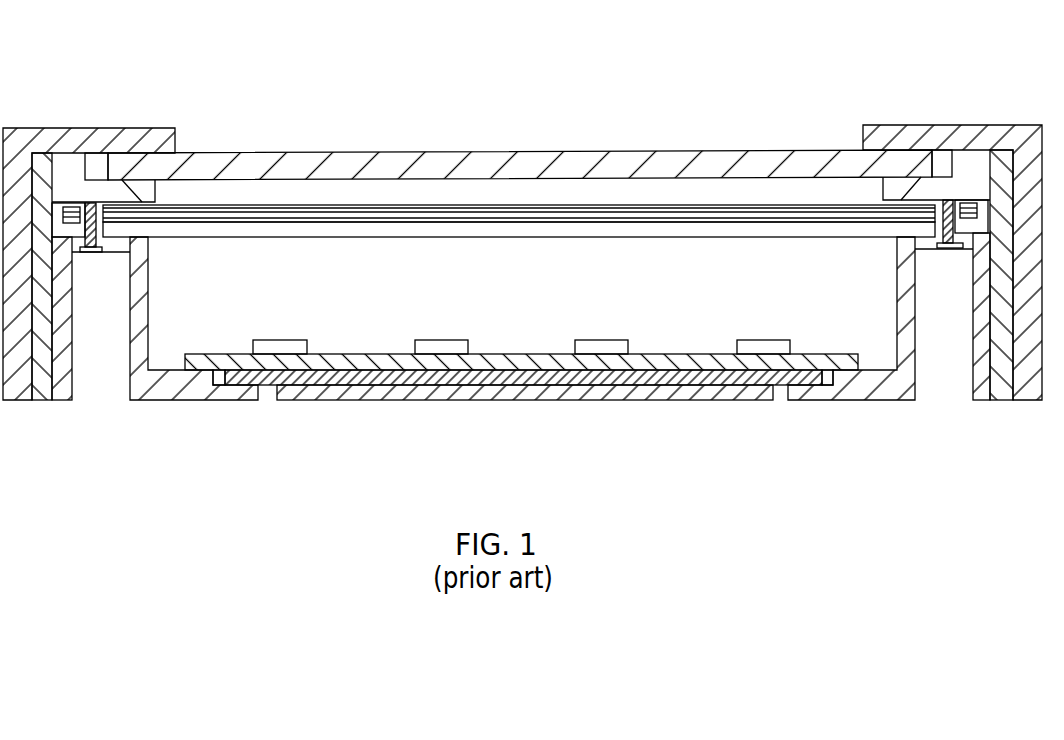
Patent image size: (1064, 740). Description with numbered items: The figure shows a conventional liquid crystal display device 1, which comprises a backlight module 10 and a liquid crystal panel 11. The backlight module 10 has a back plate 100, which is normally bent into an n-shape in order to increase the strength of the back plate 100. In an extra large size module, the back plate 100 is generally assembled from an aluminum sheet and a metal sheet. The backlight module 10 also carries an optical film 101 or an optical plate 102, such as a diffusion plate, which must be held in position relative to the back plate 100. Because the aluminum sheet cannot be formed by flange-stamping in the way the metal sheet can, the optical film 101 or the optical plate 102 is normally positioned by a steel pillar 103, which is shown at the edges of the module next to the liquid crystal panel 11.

The liquid crystal display device 1 is at (522, 256).
The backlight module 10 is at (122, 363).
The liquid crystal panel 11 is at (463, 138).
The back plate 100 is at (133, 303).
The optical film 101 is at (527, 206).
The optical plate 102 is at (458, 238).
The steel pillar 103 is at (92, 217).